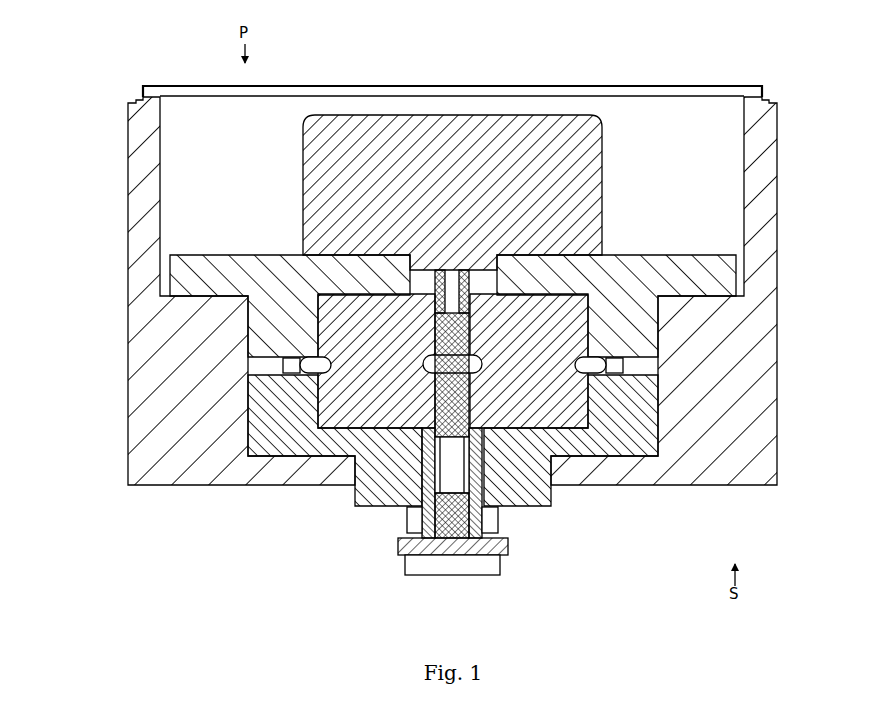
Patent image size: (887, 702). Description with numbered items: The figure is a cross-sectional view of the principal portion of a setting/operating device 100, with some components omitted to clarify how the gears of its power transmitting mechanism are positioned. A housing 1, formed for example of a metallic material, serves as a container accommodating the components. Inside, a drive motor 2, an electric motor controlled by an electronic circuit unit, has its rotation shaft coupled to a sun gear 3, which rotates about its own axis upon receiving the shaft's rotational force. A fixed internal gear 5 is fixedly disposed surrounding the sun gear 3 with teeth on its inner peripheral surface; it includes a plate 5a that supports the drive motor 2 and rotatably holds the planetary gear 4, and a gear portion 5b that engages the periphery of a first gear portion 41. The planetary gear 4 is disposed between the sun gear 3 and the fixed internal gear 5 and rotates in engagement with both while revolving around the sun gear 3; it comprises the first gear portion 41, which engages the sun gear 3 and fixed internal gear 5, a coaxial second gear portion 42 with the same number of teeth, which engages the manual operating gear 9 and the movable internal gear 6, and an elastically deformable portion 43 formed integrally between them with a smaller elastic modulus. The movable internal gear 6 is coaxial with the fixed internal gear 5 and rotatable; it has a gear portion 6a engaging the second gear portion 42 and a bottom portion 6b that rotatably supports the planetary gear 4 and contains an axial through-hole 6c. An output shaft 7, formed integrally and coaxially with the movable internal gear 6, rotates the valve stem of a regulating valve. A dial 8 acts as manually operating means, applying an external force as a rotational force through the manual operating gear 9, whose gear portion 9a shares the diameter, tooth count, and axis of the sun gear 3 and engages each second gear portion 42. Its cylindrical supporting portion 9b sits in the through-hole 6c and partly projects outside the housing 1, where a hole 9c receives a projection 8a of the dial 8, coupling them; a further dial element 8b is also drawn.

The setting/operating device 100 is at (793, 75).
The housing 1 is at (779, 183).
The drive motor 2 is at (455, 115).
The sun gear 3 is at (660, 320).
The planetary gear 4 is at (437, 308).
The first gear portion 41 is at (335, 345).
The second gear portion 42 is at (300, 388).
The elastically deformable portion 43 is at (283, 362).
The fixed internal gear 5 is at (80, 262).
The plate 5a is at (183, 274).
The gear portion 5b is at (315, 333).
The movable internal gear 6 is at (80, 410).
The gear portion 6a is at (292, 418).
The bottom portion 6b is at (265, 452).
The through-hole 6c is at (400, 490).
The output shaft 7 is at (500, 565).
The dial 8 is at (381, 539).
The projection 8a is at (407, 520).
The nut 8b is at (398, 548).
The manual operating gear 9 is at (644, 406).
The gear portion 9a is at (470, 395).
The supporting portion 9b is at (475, 450).
The hole 9c is at (490, 500).